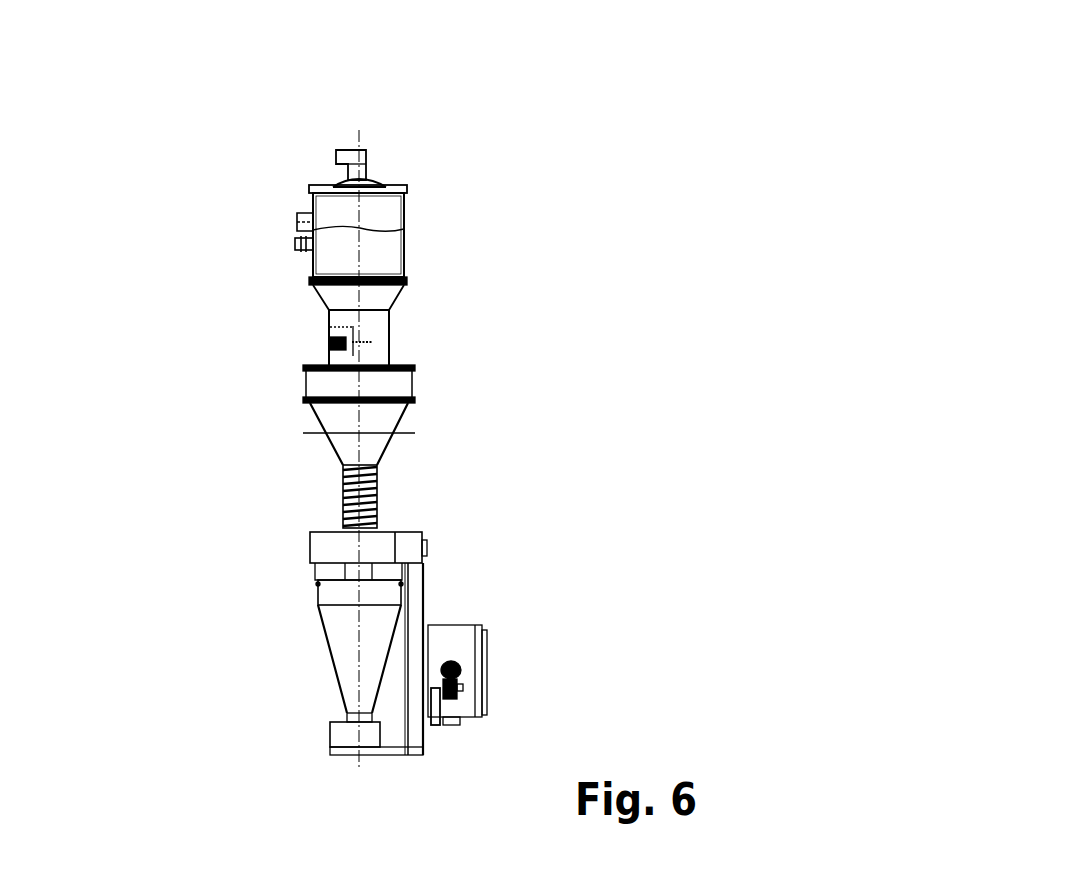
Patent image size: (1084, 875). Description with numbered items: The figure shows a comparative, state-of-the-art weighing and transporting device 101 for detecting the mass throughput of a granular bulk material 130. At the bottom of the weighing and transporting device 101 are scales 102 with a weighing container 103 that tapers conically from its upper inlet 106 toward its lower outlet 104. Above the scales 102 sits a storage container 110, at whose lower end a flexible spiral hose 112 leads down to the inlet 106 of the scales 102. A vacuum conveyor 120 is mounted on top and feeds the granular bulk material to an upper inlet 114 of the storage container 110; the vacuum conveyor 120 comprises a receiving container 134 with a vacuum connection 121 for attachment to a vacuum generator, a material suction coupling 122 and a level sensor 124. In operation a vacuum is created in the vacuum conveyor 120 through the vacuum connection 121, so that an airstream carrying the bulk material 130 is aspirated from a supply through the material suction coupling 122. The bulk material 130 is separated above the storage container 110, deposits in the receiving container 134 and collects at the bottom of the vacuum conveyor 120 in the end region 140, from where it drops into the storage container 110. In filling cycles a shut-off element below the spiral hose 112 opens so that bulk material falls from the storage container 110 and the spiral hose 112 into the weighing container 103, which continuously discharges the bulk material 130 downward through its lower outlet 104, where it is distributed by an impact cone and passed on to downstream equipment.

The weighing and transporting device 101 is at (647, 128).
The scales 102 is at (317, 602).
The weighing container 103 is at (337, 640).
The lower outlet 104 is at (352, 748).
The upper inlet 106 is at (323, 530).
The storage container 110 is at (403, 418).
The spiral hose 112 is at (380, 487).
The upper inlet of the storage container 114 is at (322, 365).
The vacuum conveyor 120 is at (412, 220).
The vacuum connection 121 is at (337, 150).
The material suction coupling 122 is at (300, 217).
The level sensor 124 is at (300, 240).
The granular bulk material 130 is at (395, 242).
The receiving container 134 is at (397, 215).
The end region 140 is at (390, 343).